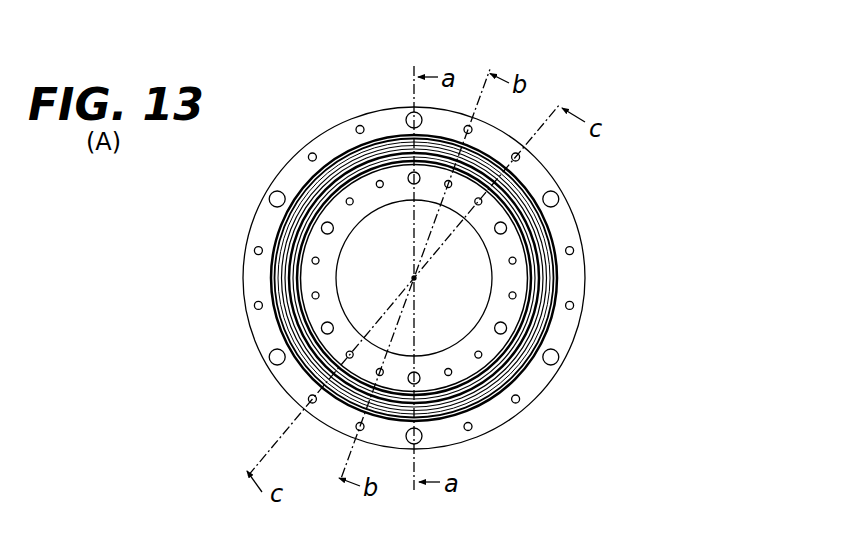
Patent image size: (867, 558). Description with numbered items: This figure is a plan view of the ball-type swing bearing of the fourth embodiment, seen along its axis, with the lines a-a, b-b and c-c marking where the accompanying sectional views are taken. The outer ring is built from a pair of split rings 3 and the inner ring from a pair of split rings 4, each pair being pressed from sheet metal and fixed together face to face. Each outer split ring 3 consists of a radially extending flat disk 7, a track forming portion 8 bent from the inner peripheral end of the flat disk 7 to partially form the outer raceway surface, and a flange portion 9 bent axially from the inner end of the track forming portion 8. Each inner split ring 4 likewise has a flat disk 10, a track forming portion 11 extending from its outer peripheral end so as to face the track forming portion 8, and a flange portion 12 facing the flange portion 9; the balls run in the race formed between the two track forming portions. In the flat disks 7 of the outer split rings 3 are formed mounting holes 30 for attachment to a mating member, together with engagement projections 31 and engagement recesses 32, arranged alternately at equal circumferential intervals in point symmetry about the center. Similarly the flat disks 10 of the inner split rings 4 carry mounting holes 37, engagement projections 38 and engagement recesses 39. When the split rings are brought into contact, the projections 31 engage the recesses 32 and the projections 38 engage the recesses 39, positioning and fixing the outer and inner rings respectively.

The split ring 3 is at (652, 330).
The split ring 4 is at (212, 137).
The flat disk 7 is at (567, 332).
The track forming portion 8 is at (540, 337).
The flange portion 9 is at (518, 358).
The flat disk 10 is at (304, 186).
The track forming portion 11 is at (287, 222).
The flange portion 12 is at (278, 241).
The mounting hole 30 is at (409, 113).
The engagement projection 31 is at (357, 125).
The engagement recess 32 is at (309, 152).
The mounting hole 37 is at (438, 160).
The engagement projection 38 is at (320, 260).
The engagement recess 39 is at (311, 294).